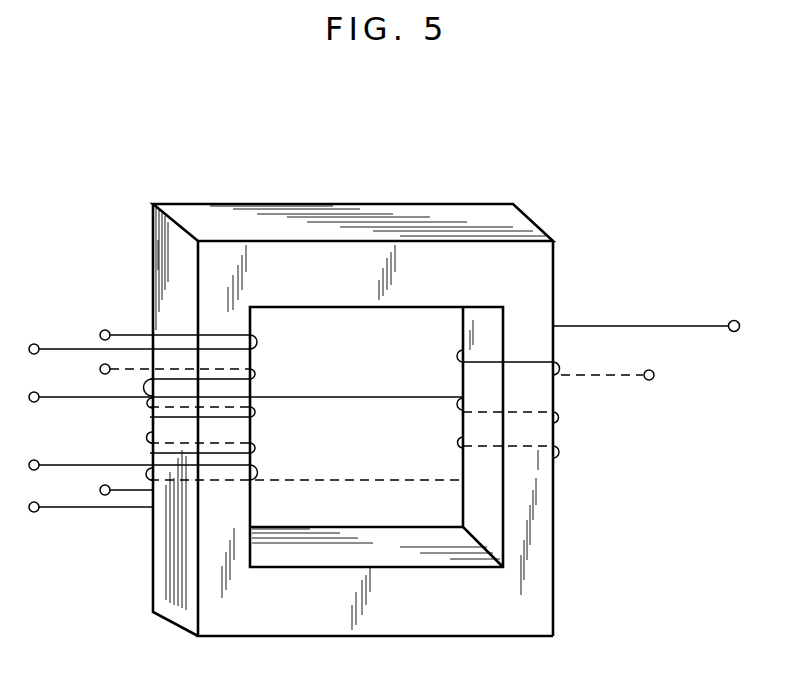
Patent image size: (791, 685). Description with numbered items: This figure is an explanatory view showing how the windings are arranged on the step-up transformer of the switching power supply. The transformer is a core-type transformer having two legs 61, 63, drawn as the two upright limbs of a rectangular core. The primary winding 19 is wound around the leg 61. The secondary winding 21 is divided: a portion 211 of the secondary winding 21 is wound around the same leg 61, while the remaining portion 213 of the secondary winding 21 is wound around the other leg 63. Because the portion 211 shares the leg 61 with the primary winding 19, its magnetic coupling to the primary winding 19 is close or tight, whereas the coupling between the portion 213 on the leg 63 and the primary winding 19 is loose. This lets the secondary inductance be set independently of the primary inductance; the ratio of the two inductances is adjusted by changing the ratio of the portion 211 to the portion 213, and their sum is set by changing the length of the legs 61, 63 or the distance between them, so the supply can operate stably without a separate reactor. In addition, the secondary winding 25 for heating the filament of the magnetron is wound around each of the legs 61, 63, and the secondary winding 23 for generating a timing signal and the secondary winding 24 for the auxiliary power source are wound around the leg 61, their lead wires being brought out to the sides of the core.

The primary winding 19 is at (124, 333).
The secondary winding 21 is at (101, 372).
The secondary winding for generating a timing signal 23 is at (60, 400).
The secondary winding for the auxiliary power source 24 is at (53, 510).
The secondary winding for heating the filament 25 is at (63, 347).
The leg 61 is at (150, 588).
The leg 63 is at (540, 585).
The portion of the secondary winding 211 is at (240, 364).
The remaining portion of the secondary winding 213 is at (560, 451).